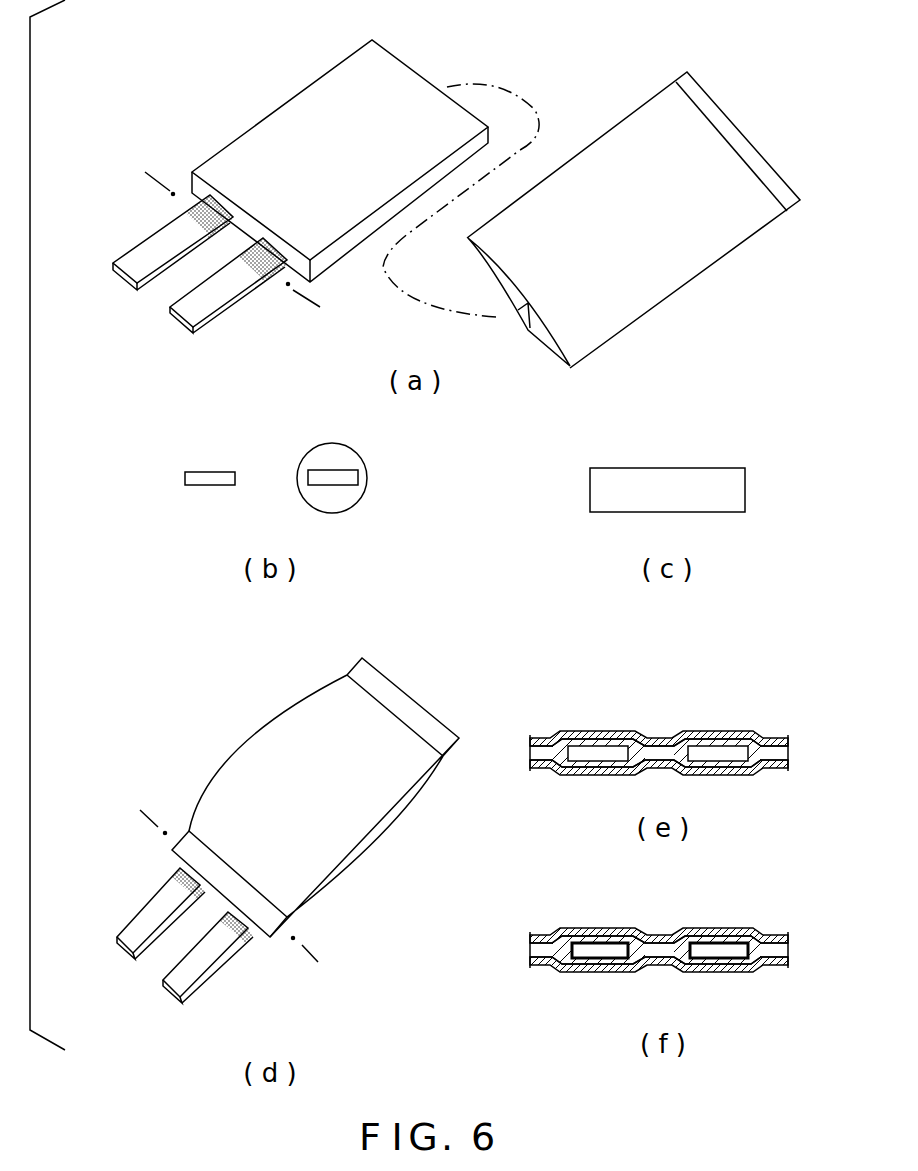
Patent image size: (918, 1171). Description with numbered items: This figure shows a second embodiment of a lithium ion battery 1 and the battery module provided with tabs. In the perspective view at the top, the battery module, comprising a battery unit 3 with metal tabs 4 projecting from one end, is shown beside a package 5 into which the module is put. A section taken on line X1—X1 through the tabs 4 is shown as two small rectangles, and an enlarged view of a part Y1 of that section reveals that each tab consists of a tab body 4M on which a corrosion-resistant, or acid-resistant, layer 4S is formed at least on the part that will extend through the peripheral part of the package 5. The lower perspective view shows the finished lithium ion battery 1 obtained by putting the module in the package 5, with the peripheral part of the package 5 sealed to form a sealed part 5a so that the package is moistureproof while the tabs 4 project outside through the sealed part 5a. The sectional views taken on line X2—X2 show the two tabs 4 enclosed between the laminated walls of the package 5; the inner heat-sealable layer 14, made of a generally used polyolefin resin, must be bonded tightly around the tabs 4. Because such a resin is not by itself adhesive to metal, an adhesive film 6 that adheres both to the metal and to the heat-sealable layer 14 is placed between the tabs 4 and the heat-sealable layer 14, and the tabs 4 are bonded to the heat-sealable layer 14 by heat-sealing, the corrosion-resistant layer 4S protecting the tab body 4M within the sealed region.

The lithium ion battery 1 is at (584, 72).
The battery unit 3 is at (298, 115).
The metal tab 4 is at (407, 612).
The tab body 4M is at (143, 251).
The corrosion-resistant layer 4S is at (190, 212).
The package 5 is at (453, 518).
The sealed part 5a is at (183, 843).
The adhesive film 6 is at (647, 919).
The heat-sealable layer 14 is at (659, 820).
The section line X1- X1 is at (228, 238).
The section line X2- X2 is at (233, 882).
The part Y1 is at (367, 492).